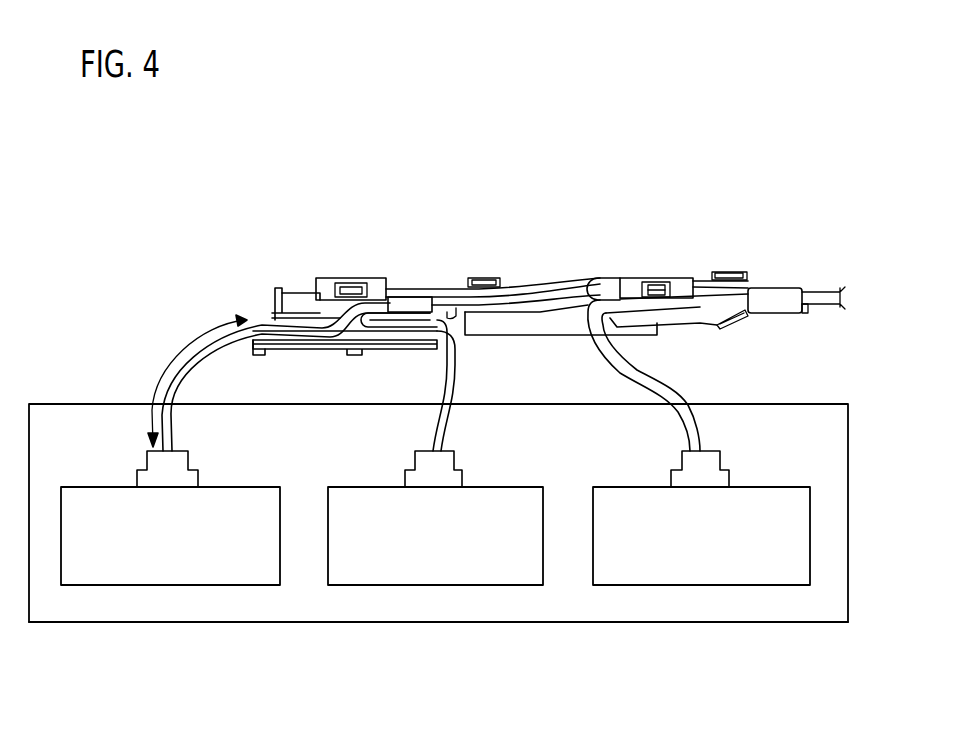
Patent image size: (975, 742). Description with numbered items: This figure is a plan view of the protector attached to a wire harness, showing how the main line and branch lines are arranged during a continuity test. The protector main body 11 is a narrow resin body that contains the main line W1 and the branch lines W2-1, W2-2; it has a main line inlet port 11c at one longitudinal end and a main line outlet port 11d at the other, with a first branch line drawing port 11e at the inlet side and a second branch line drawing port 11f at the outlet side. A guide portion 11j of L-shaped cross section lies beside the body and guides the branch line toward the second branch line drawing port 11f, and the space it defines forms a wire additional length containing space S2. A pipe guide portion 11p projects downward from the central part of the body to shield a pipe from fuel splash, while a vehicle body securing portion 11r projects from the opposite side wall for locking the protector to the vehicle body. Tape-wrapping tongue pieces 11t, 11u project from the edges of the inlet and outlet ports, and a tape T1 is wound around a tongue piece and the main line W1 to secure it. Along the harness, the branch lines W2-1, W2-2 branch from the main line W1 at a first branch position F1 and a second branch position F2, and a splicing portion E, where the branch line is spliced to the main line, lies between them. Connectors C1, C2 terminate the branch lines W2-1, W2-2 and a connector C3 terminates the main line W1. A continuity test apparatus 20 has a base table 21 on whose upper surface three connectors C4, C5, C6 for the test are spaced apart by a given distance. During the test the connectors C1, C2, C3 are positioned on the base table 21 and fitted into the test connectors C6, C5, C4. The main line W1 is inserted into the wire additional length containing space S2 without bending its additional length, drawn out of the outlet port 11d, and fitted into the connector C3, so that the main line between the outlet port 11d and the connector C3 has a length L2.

The continuity test apparatus 20 is at (50, 403).
The base table 21 is at (52, 624).
The protector main body 11 is at (298, 286).
The main line outlet port 11d is at (272, 320).
The tape-wrapping tongue piece 11u is at (256, 352).
The guide portion 11j is at (415, 351).
The second branch line drawing port 11f is at (442, 302).
The vehicle body securing portion 11r is at (376, 277).
The first branch line drawing port 11e is at (590, 282).
The main line inlet port 11c is at (742, 272).
The tape-wrapping tongue piece 11t is at (805, 313).
The pipe guide portion 11p is at (563, 333).
The second branch position F2 is at (346, 326).
The first branch position F1 is at (612, 290).
The splicing portion E is at (405, 297).
The tape T1 is at (777, 289).
The wire additional length containing space S2 is at (340, 332).
The main line W1 is at (188, 378).
The branch line W2-1 is at (630, 371).
The branch line W2-2 is at (449, 391).
The length L2 is at (197, 381).
The connector C1 is at (692, 459).
The connector C2 is at (428, 461).
The connector C3 is at (158, 464).
The connector for a continuity test C4 is at (232, 578).
The connector for a continuity test C5 is at (470, 573).
The connector for a continuity test C6 is at (732, 573).